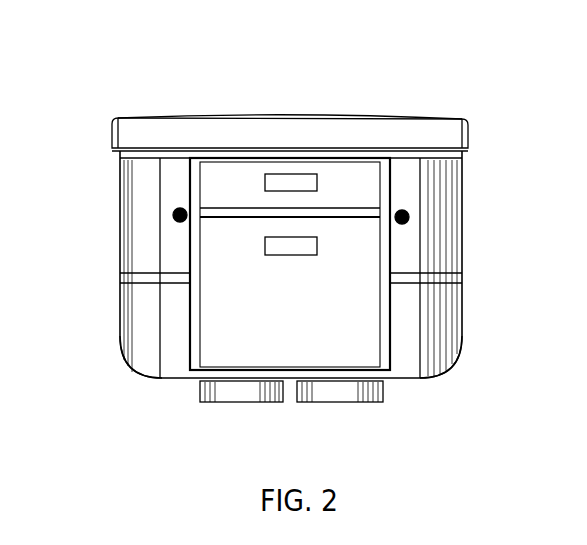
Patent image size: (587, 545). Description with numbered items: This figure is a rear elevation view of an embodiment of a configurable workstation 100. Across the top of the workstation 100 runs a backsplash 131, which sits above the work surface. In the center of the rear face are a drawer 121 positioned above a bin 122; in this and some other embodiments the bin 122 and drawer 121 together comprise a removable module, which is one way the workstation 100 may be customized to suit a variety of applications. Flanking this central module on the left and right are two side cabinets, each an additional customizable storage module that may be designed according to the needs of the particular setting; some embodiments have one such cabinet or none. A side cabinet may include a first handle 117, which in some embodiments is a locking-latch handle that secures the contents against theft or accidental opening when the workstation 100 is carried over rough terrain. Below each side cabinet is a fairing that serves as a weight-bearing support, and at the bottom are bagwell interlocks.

The configurable workstation 100 is at (480, 83).
The first handle 117 is at (112, 126).
The backsplash 131 is at (295, 115).
The drawer 121 is at (358, 195).
The bin 122 is at (315, 290).